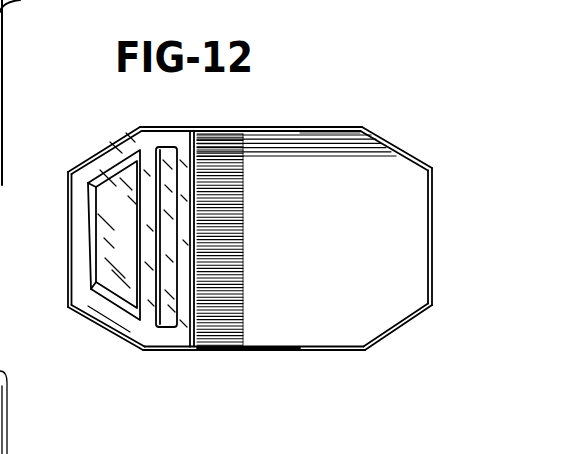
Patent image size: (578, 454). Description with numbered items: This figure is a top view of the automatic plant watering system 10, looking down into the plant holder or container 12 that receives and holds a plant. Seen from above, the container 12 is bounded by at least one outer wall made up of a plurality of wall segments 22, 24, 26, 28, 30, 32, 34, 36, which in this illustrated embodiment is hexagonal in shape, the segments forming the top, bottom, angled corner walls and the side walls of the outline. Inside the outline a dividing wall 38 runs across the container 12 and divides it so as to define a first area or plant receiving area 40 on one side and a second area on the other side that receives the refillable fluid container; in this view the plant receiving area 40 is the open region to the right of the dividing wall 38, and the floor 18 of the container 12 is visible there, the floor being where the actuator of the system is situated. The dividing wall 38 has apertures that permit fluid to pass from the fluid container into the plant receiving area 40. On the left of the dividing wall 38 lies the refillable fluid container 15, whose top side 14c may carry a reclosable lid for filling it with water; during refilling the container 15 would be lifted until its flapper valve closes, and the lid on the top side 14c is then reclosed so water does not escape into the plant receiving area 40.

The automatic plant watering system 10 is at (361, 109).
The plant holder or container 12 is at (323, 350).
The top side of fluid container 14c is at (107, 247).
The container 15 is at (147, 157).
The floor 18 is at (278, 234).
The wall segment 22 is at (247, 350).
The wall segment 24 is at (395, 332).
The wall segment 26 is at (428, 238).
The wall segment 28 is at (415, 157).
The wall segment 30 is at (298, 126).
The wall segment 32 is at (95, 155).
The wall segment 34 is at (67, 217).
The wall segment 36 is at (100, 327).
The dividing wall 38 is at (197, 156).
The plant receiving area 40 is at (354, 170).